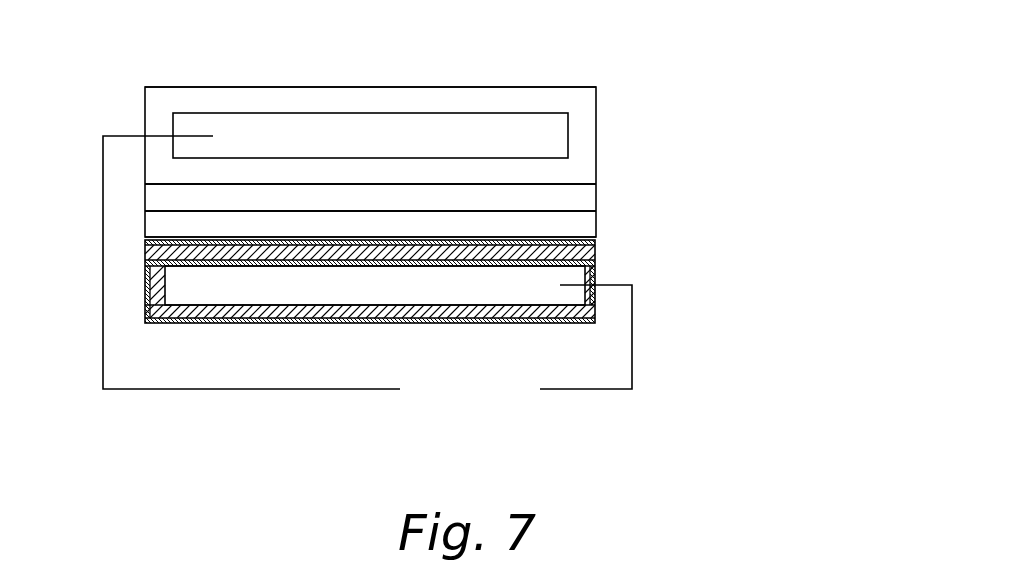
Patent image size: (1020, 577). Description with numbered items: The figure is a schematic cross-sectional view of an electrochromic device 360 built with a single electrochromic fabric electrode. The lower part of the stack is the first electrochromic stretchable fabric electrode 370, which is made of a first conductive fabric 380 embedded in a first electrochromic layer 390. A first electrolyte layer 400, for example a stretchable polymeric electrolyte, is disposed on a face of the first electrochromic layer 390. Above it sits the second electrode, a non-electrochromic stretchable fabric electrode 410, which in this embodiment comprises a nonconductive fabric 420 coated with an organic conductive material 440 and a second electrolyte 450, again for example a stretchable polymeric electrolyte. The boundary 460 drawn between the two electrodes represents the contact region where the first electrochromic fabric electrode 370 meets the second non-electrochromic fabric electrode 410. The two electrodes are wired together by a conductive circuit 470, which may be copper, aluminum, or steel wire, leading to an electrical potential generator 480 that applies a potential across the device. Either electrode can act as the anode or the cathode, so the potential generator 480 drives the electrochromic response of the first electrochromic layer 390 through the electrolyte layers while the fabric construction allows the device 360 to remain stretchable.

The electrochromic device 360 is at (765, 88).
The first electrochromic stretchable fabric electrode 370 is at (693, 213).
The first conductive fabric 380 is at (473, 283).
The first electrochromic layer 390 is at (237, 324).
The first electrolyte layer 400 is at (577, 229).
The non-electrochromic stretchable fabric electrode 410 is at (693, 85).
The nonconductive fabric 420 is at (493, 137).
The organic conductive material 440 is at (577, 138).
The second electrolyte 450 is at (308, 198).
The boundary 460 is at (368, 210).
The conductive circuit 470 is at (103, 290).
The electrical potential generator 480 is at (450, 408).